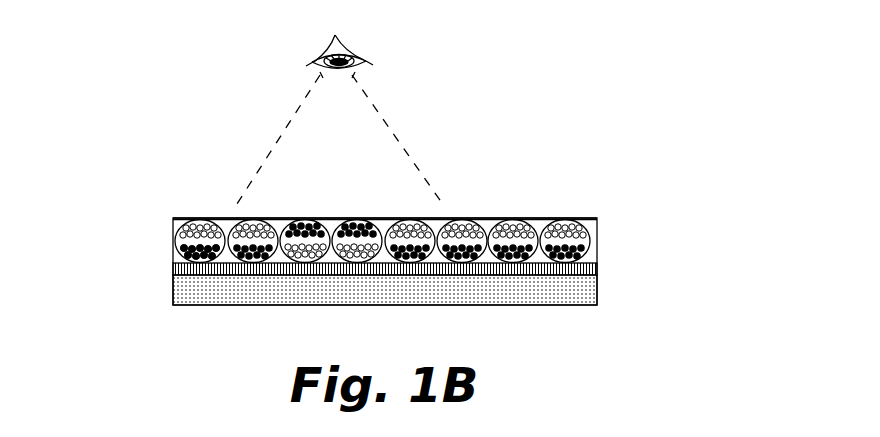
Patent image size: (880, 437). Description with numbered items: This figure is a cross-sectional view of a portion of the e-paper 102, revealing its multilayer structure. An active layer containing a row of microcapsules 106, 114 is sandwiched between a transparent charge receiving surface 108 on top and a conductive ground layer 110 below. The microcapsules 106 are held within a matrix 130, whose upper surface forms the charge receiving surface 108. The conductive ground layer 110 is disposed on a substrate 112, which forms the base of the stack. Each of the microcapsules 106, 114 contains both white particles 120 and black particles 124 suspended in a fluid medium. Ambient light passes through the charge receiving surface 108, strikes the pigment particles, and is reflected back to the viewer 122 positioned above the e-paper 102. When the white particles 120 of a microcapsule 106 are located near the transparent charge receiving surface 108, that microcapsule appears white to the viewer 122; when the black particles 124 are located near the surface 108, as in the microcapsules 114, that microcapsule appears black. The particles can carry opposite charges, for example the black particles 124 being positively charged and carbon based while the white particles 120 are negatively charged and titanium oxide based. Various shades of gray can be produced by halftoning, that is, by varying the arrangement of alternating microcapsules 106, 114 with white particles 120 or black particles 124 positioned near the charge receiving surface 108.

The e-paper 102 is at (617, 208).
The microcapsules 106 is at (510, 221).
The transparent charge receiving surface 108 is at (583, 220).
The conductive ground layer 110 is at (177, 267).
The substrate 112 is at (525, 297).
The microcapsules 114 is at (338, 252).
The white particles 120 is at (180, 225).
The viewer 122 is at (343, 48).
The black particles 124 is at (177, 250).
The matrix 130 is at (542, 227).